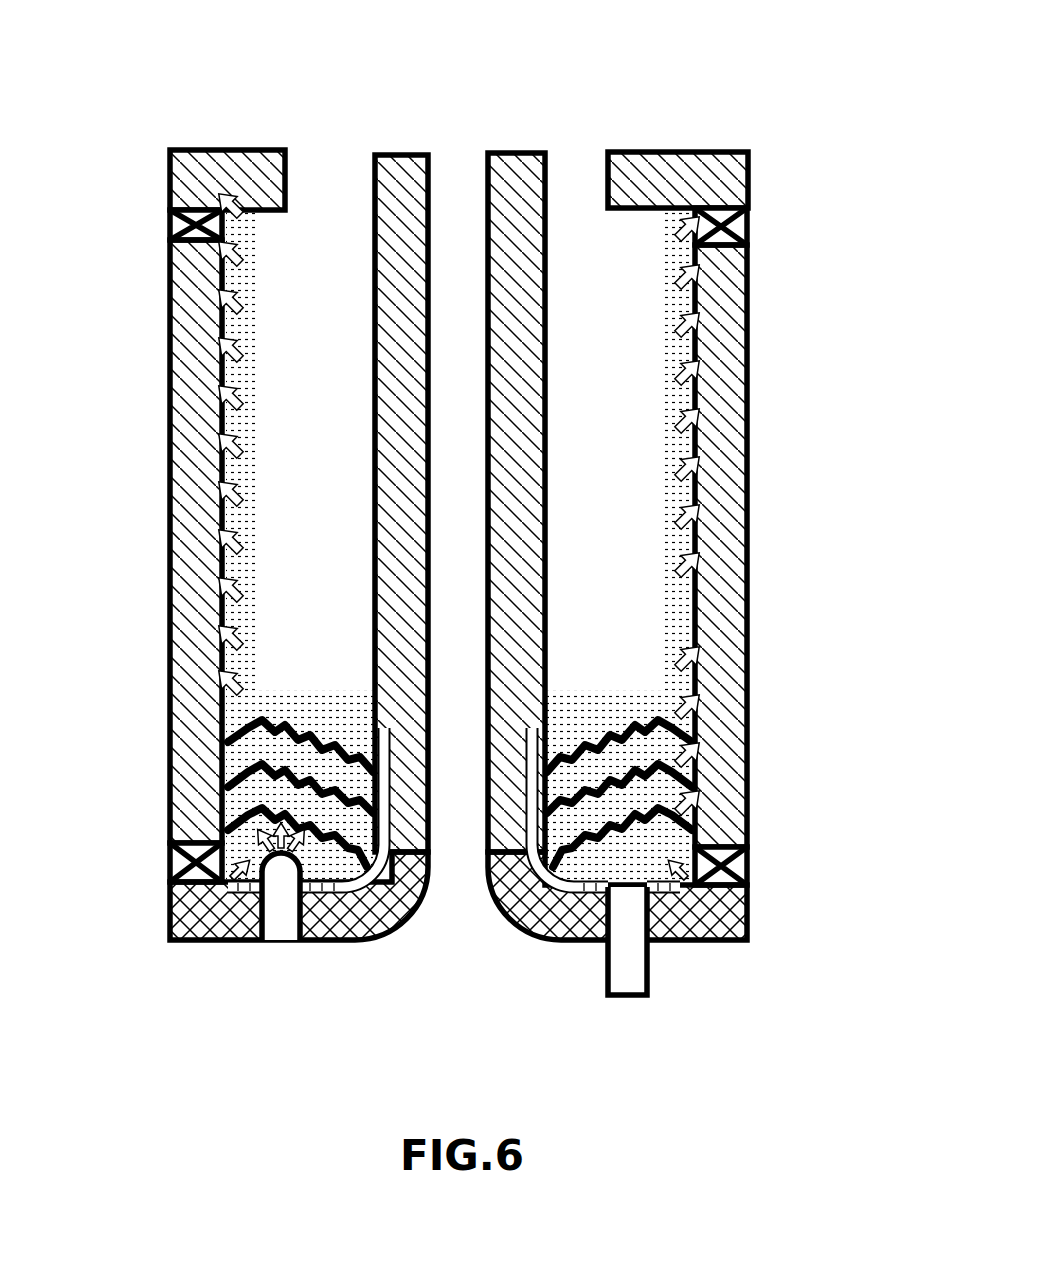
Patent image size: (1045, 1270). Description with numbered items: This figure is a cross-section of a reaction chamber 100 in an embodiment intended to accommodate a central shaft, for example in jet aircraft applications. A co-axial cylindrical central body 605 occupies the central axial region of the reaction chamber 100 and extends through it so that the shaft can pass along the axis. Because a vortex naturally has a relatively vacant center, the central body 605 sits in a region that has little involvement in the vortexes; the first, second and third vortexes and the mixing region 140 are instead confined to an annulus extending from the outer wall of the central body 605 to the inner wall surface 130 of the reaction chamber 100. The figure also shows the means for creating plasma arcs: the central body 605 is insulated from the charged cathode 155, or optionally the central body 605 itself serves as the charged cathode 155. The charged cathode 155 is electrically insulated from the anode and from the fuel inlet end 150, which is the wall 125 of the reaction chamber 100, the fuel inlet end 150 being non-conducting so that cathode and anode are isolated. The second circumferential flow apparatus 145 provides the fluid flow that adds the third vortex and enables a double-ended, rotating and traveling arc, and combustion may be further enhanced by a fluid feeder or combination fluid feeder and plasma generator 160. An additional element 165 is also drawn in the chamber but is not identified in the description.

The reaction chamber 100 is at (145, 135).
The co-axial cylindrical central body 605 is at (515, 232).
The wall 125 is at (715, 377).
The inner wall surface 130 is at (668, 617).
The mixing region 140 is at (582, 722).
The second circumferential flow apparatus 145 is at (740, 863).
The fuel inlet end 150 is at (713, 915).
The charged cathode 155 is at (663, 893).
The fluid feeder or combination fluid feeder and plasma generator 160 is at (628, 945).
The heating coil 165 is at (307, 737).